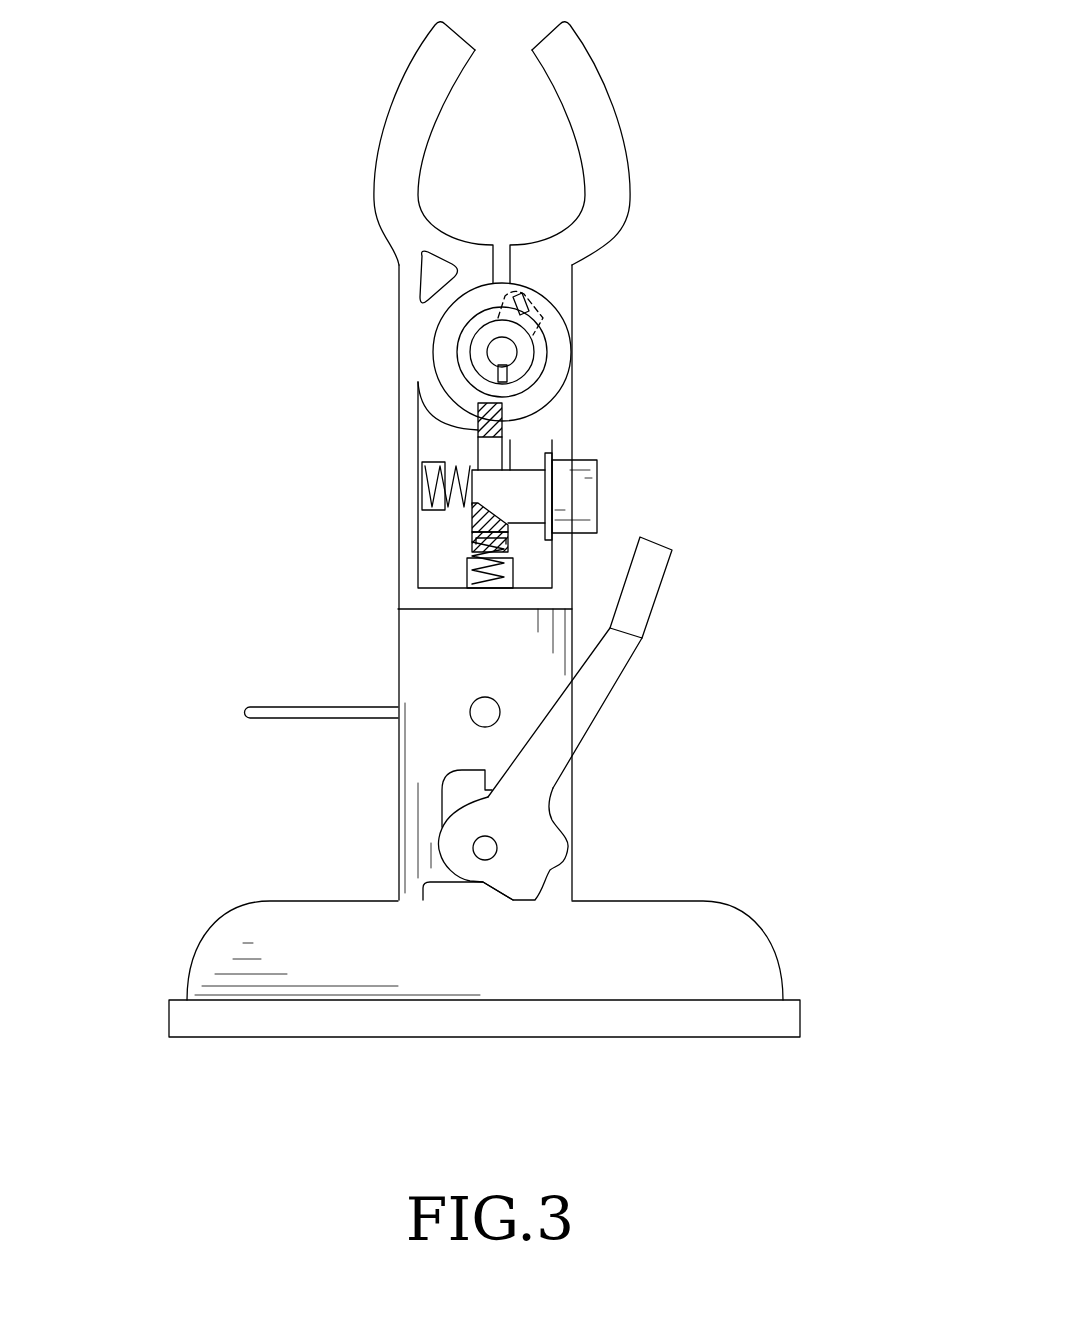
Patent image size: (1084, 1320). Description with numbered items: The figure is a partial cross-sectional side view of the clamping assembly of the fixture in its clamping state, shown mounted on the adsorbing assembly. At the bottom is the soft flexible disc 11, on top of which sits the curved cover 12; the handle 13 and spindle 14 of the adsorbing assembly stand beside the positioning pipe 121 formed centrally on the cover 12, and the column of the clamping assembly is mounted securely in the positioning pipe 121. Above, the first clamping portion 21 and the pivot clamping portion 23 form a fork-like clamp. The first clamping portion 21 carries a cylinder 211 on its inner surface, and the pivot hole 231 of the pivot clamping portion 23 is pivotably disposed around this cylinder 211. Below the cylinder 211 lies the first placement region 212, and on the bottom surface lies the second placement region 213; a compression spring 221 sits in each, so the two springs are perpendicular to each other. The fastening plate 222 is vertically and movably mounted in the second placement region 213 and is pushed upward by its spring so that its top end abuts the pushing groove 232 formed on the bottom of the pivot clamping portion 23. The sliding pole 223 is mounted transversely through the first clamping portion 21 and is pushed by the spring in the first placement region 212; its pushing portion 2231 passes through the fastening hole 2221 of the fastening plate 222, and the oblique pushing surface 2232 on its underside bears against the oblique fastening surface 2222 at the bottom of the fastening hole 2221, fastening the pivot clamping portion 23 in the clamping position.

The flexible disc 11 is at (738, 1028).
The cover 12 is at (730, 923).
The handle 13 is at (622, 652).
The spindle 14 is at (485, 848).
The positioning pipe 121 is at (412, 670).
The first clamping portion 21 is at (408, 78).
The pivot clamping portion 23 is at (622, 168).
The cylinder 211 is at (523, 357).
The first placement region 212 is at (425, 507).
The second placement region 213 is at (468, 575).
The compression spring 221 is at (440, 472).
The fastening plate 222 is at (485, 423).
The sliding pole 223 is at (592, 483).
The pivot hole 231 is at (543, 330).
The pushing groove 232 is at (465, 395).
The fastening hole 2221 is at (483, 452).
The fastening surface 2222 is at (502, 532).
The pushing portion 2231 is at (518, 477).
The pushing surface 2232 is at (502, 523).